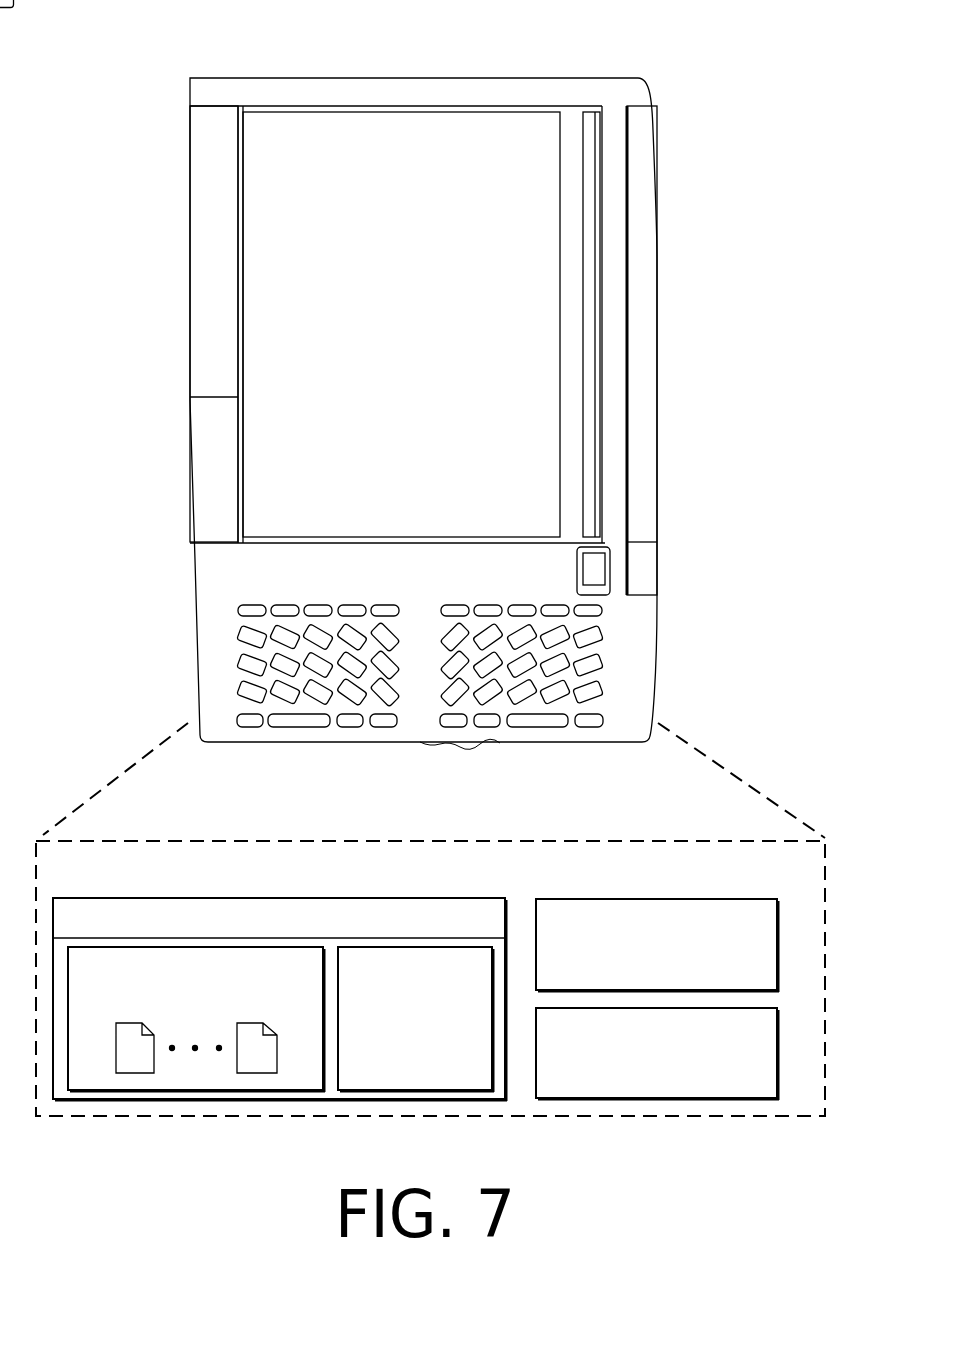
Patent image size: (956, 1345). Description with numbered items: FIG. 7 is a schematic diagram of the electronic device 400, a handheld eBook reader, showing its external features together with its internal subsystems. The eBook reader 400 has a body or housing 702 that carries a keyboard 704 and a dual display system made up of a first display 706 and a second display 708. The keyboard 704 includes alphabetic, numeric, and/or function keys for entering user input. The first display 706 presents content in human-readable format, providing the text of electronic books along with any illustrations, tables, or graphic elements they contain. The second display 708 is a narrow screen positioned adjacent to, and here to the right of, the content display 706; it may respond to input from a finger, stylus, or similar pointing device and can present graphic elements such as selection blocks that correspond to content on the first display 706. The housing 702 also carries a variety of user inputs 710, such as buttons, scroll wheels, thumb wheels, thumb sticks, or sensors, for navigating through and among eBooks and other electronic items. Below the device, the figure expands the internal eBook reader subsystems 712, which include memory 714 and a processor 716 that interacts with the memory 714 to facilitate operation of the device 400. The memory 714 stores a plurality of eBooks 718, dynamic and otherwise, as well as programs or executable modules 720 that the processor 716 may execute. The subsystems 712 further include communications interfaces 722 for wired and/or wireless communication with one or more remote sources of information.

The electronic device 400 is at (557, 44).
The housing 702 is at (279, 79).
The keyboard 704 is at (404, 591).
The first display 706 is at (403, 307).
The second display 708 is at (589, 178).
The user inputs 710 is at (203, 195).
The eBook reader subsystems 712 is at (593, 873).
The memory 714 is at (343, 930).
The processor 716 is at (637, 969).
The eBooks 718 is at (213, 1034).
The programs or modules 720 is at (396, 1033).
The communications interfaces 722 is at (637, 1091).